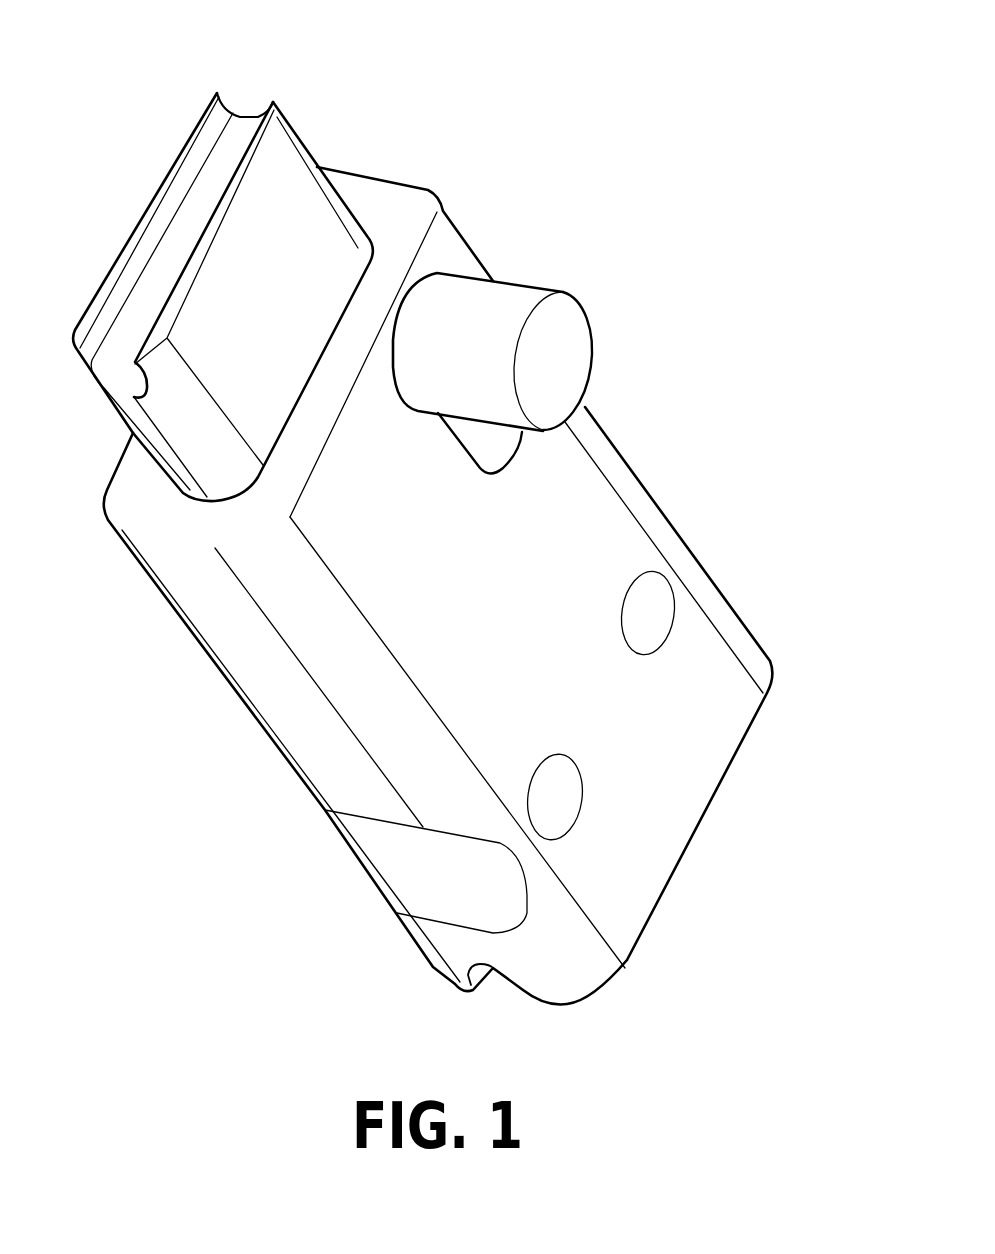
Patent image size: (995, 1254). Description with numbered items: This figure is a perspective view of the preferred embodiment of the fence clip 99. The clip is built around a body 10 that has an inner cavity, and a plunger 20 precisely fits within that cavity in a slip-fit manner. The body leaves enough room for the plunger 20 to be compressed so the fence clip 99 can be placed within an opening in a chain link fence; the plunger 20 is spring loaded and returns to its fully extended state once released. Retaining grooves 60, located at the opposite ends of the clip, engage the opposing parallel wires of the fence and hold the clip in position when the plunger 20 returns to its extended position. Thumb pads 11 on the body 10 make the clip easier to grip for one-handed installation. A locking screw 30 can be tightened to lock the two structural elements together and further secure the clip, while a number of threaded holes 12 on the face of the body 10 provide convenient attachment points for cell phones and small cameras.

The fence clip 99 is at (206, 754).
The body 10 is at (435, 630).
The thumb pads 11 is at (413, 865).
The threaded holes 12 is at (647, 623).
The plunger 20 is at (275, 227).
The locking screw 30 is at (477, 323).
The retaining grooves 60 is at (225, 147).